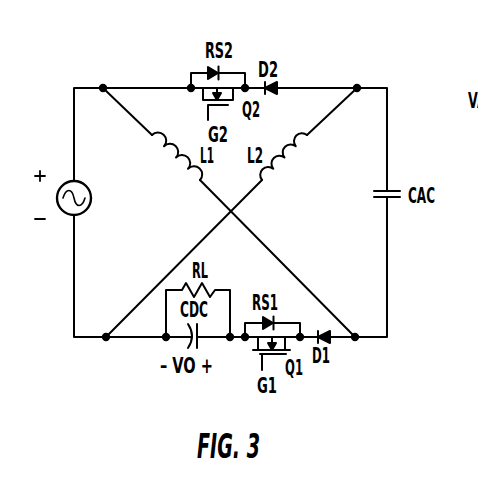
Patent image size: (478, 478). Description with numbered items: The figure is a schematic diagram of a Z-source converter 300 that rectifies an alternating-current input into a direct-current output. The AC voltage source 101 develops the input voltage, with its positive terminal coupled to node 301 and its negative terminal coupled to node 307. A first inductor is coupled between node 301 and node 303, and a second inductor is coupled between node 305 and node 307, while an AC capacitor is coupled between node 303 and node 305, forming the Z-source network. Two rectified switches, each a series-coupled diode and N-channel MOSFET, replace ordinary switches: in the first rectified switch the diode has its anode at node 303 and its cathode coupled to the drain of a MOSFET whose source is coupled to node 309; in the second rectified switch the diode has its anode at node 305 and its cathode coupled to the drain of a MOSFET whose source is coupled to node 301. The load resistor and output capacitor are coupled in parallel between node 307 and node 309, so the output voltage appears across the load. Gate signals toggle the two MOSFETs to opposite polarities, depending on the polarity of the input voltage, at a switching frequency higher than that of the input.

The Z-source converter 300 is at (353, 30).
The AC voltage source 101 is at (80, 182).
The node 301 is at (103, 86).
The node 303 is at (355, 340).
The node 305 is at (357, 86).
The node 307 is at (106, 340).
The node 309 is at (230, 340).